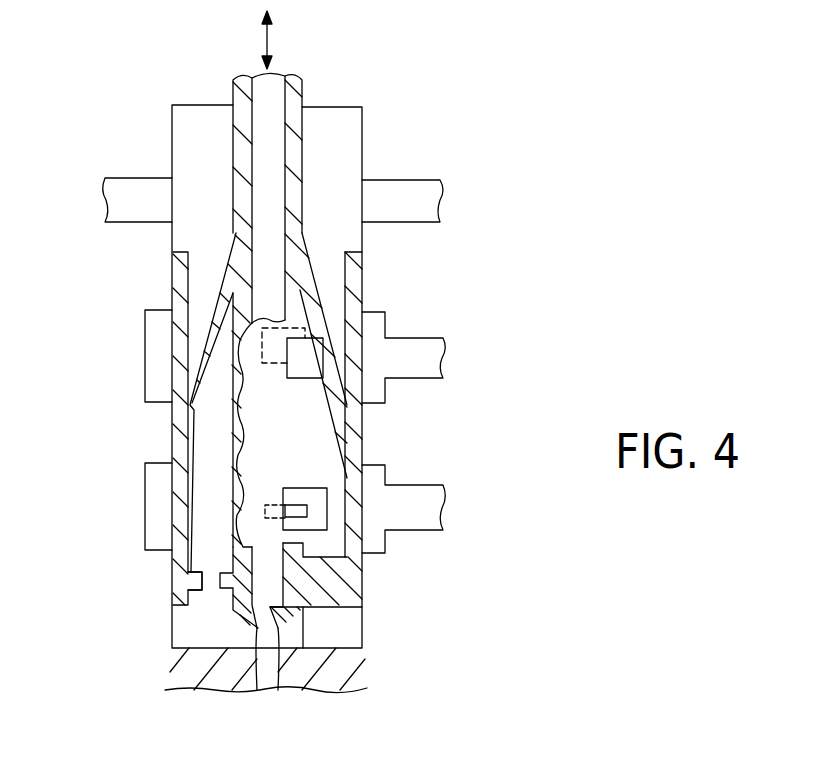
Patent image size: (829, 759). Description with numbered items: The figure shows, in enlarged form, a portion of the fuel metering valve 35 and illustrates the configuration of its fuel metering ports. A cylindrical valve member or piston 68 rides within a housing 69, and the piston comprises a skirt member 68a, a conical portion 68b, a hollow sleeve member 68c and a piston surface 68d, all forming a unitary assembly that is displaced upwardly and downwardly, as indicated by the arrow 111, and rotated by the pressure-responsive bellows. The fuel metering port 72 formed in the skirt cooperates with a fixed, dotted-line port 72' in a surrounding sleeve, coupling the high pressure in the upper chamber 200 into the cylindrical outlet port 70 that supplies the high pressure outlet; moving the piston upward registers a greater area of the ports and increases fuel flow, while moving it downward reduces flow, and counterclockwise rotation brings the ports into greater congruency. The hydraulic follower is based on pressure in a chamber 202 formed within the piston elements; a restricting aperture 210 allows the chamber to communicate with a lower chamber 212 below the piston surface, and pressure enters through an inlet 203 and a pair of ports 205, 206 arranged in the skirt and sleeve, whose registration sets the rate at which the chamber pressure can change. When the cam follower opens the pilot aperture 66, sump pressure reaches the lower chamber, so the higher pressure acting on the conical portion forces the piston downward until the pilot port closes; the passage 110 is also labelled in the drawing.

The fuel metering valve 35 is at (424, 147).
The direction of stem movement arrow 111 is at (268, 37).
The hollow sleeve member 68c is at (302, 97).
The upper chamber 200 is at (197, 152).
The housing 69 is at (362, 233).
The piston 68 is at (176, 264).
The skirt member 68a is at (235, 377).
The conical portion 68b is at (318, 310).
The passage wall 110 is at (333, 391).
The chamber 202 is at (306, 449).
The fuel metering port 72 is at (394, 342).
The port in surrounding sleeve 72' is at (384, 318).
The outlet port 70 is at (377, 388).
The port 205 is at (312, 497).
The port 206 is at (293, 510).
The inlet 203 is at (373, 542).
The piston surface 68d is at (352, 592).
The chamber 212 is at (347, 628).
The restricting aperture 210 is at (212, 583).
The pilot aperture 66 is at (268, 607).